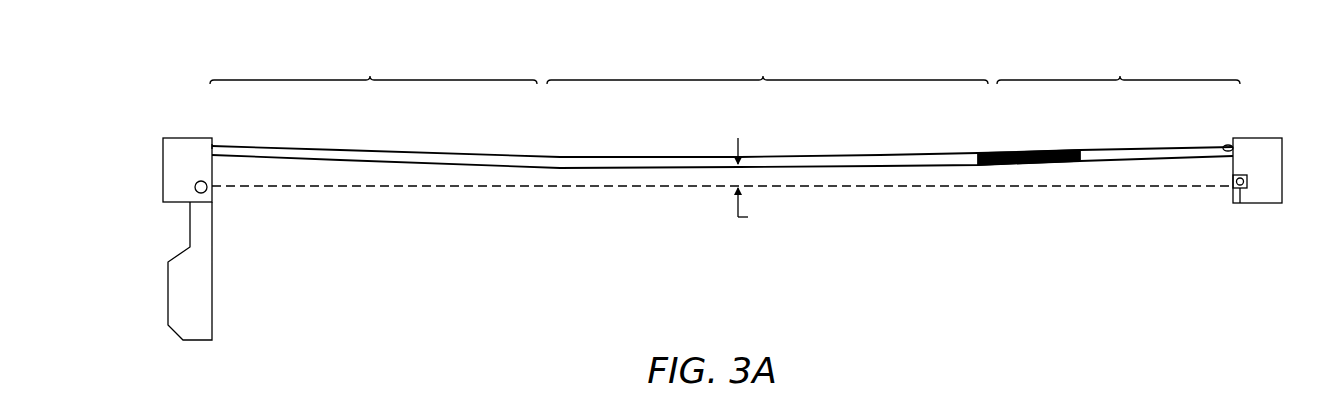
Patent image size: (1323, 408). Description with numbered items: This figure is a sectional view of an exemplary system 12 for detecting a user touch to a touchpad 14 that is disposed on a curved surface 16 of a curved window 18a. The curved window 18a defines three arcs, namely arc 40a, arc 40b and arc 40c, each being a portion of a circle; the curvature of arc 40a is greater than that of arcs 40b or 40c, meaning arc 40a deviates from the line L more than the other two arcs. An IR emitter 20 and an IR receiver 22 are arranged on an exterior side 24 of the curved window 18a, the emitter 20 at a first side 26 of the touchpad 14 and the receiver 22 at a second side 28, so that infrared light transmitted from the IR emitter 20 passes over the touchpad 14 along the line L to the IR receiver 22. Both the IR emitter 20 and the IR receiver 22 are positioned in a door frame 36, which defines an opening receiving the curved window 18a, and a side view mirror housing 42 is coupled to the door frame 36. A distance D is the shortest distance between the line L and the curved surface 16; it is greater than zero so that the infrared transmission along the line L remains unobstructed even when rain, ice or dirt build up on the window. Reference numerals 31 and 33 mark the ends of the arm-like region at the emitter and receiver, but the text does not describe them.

The system 12 is at (136, 173).
The touchpad 14 is at (1027, 153).
The curved surface 16 is at (918, 167).
The curved window 18a is at (326, 157).
The IR emitter 20 is at (194, 190).
The IR receiver 22 is at (1240, 204).
The exterior side 24 is at (625, 249).
The first side 26 is at (978, 158).
The second side 28 is at (1075, 157).
The first end of arm 31 is at (213, 149).
The second end of arm 33 is at (1226, 147).
The door frame 36 is at (171, 137).
The arc 40a is at (373, 66).
The arc 40b is at (767, 66).
The arc 40c is at (1118, 66).
The side view mirror housing 42 is at (175, 330).
The line L is at (448, 189).
The distance D is at (751, 186).